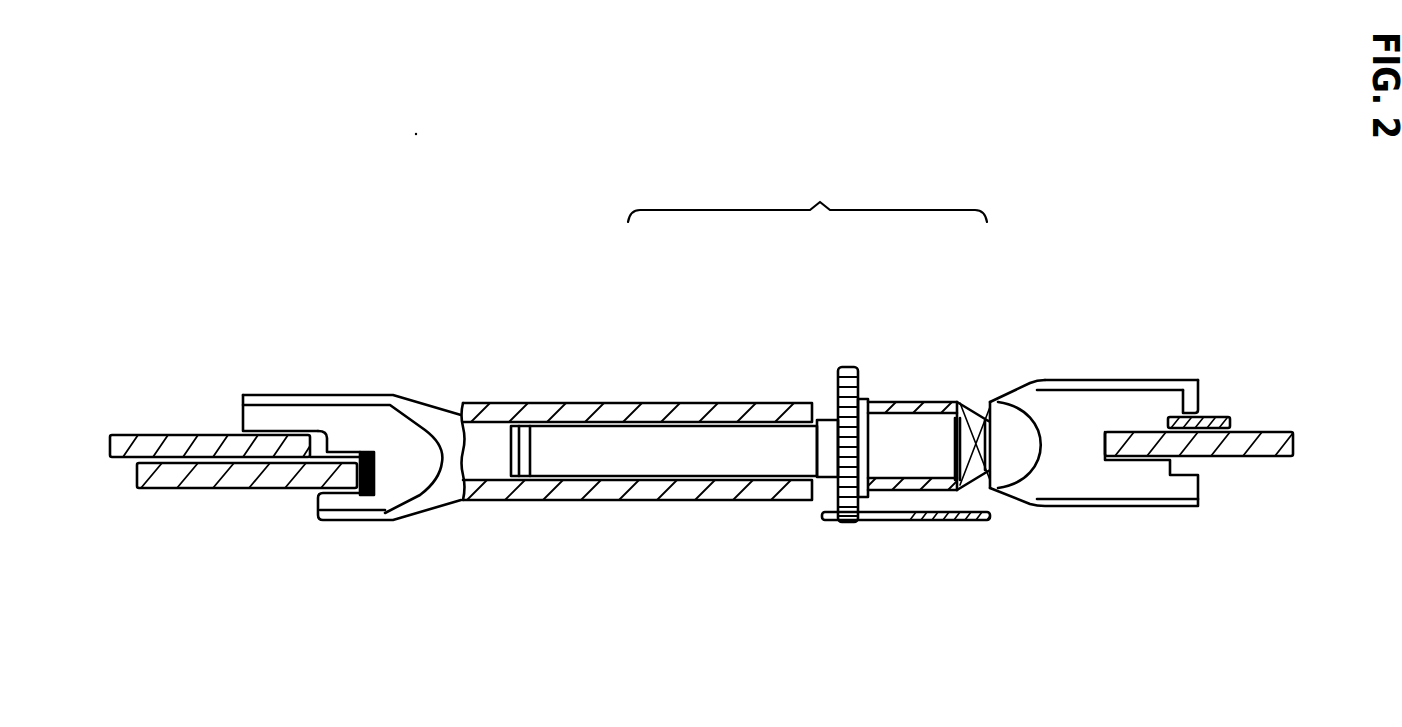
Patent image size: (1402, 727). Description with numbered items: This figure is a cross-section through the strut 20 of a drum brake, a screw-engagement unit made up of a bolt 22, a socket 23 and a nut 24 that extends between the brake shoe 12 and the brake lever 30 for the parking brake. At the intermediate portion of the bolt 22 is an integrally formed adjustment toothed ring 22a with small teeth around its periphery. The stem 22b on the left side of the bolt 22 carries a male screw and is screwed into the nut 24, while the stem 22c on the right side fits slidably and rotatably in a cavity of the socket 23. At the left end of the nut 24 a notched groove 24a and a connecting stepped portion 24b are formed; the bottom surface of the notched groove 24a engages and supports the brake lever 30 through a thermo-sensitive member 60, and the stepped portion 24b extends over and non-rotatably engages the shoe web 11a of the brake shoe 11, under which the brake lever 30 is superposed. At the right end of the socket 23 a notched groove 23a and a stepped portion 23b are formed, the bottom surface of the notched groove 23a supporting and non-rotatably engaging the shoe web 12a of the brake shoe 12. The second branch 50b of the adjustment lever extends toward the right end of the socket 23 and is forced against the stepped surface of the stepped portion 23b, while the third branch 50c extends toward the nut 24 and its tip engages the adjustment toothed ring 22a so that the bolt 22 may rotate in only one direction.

The strut 20 is at (807, 195).
The nut 24 is at (739, 399).
The notched groove 24a is at (358, 453).
The stepped portion 24b is at (308, 433).
The thermo-sensitive member 60 is at (370, 496).
The brake shoe 11 is at (120, 434).
The shoe web 11a is at (205, 433).
The brake lever 30 is at (225, 490).
The bolt 22 is at (826, 410).
The adjustment toothed ring 22a is at (846, 366).
The stem 22b is at (605, 425).
The stem 22c is at (910, 425).
The third branch 50c is at (915, 522).
The socket 23 is at (1012, 390).
The notched groove 23a is at (1122, 430).
The stepped portion 23b is at (1184, 416).
The second branch 50b is at (1215, 416).
The brake shoe 12 is at (1285, 433).
The shoe web 12a is at (1245, 457).